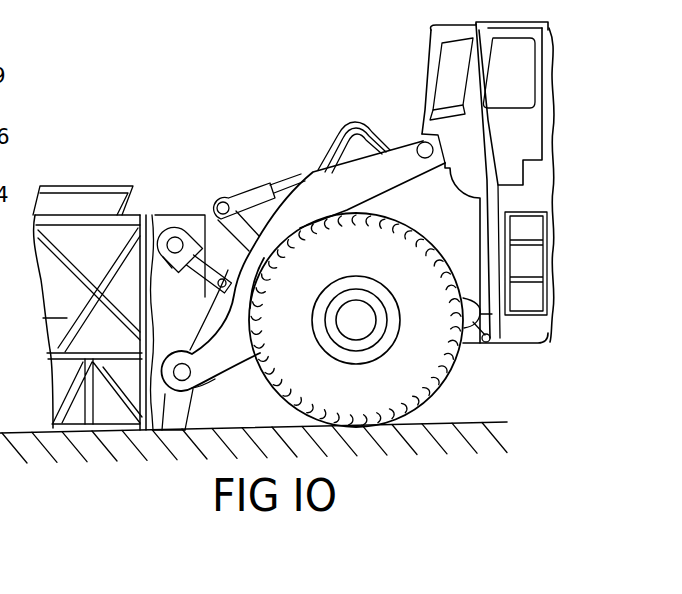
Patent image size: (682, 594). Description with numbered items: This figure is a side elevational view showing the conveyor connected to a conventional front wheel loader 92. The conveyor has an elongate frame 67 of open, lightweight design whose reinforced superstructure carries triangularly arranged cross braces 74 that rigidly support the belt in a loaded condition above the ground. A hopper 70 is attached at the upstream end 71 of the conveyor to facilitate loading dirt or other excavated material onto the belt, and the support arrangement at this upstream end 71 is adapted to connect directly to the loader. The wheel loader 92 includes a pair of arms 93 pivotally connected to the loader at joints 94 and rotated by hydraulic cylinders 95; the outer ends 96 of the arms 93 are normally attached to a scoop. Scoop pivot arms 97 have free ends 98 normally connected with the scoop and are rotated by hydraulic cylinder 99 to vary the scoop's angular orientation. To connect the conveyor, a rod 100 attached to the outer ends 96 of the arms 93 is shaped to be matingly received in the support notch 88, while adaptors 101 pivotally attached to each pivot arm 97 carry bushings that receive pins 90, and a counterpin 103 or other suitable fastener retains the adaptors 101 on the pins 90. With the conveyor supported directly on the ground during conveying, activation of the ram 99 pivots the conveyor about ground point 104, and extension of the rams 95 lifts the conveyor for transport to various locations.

The elongate frame 67 is at (58, 363).
The hopper 70 is at (67, 190).
The upstream end 71 is at (132, 215).
The cross braces 74 is at (68, 402).
The support notch 88 is at (192, 401).
The pins 90 is at (175, 236).
The front wheel loader 92 is at (401, 128).
The arms 93 is at (316, 186).
The joints 94 is at (434, 149).
The hydraulic cylinders 95 is at (460, 304).
The outer ends 96 is at (199, 374).
The scoop pivot arms 97 is at (212, 226).
The free ends 98 is at (207, 319).
The hydraulic cylinder 99 is at (250, 193).
The rod 100 is at (189, 369).
The adaptors 101 is at (206, 284).
The counterpin 103 is at (166, 262).
The ground point 104 is at (163, 433).